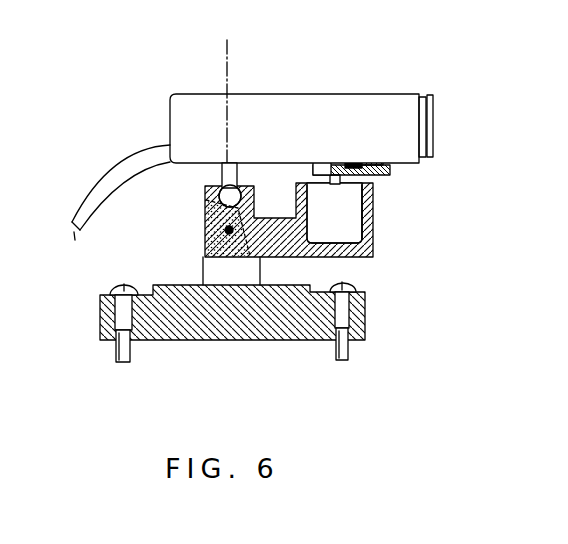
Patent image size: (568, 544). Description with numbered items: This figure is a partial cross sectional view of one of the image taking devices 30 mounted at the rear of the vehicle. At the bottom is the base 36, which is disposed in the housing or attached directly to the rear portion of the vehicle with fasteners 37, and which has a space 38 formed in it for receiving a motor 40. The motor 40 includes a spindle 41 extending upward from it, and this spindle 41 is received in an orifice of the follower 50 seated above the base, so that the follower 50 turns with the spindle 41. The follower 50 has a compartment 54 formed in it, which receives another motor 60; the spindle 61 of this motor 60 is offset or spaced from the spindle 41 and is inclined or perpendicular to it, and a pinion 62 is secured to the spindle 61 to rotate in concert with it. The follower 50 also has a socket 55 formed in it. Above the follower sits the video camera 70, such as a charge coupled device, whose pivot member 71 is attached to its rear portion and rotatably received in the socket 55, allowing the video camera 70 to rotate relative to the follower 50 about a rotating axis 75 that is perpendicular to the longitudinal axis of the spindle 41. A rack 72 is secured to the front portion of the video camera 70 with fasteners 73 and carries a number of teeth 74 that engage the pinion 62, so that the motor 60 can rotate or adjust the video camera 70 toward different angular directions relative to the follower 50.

The image taking device 30 is at (122, 97).
The base 36 is at (235, 331).
The fasteners 37 is at (346, 350).
The space 38 is at (203, 262).
The motor 40 is at (206, 229).
The spindle 41 is at (215, 256).
The follower 50 is at (370, 256).
The compartment 54 is at (353, 225).
The socket 55 is at (207, 200).
The motor 60 is at (353, 213).
The spindle 61 is at (340, 183).
The pinion 62 is at (325, 168).
The video camera 70 is at (263, 100).
The pivot member 71 is at (217, 190).
The rack 72 is at (393, 170).
The fasteners 73 is at (371, 153).
The teeth 74 is at (347, 164).
The rotating axis 75 is at (222, 57).